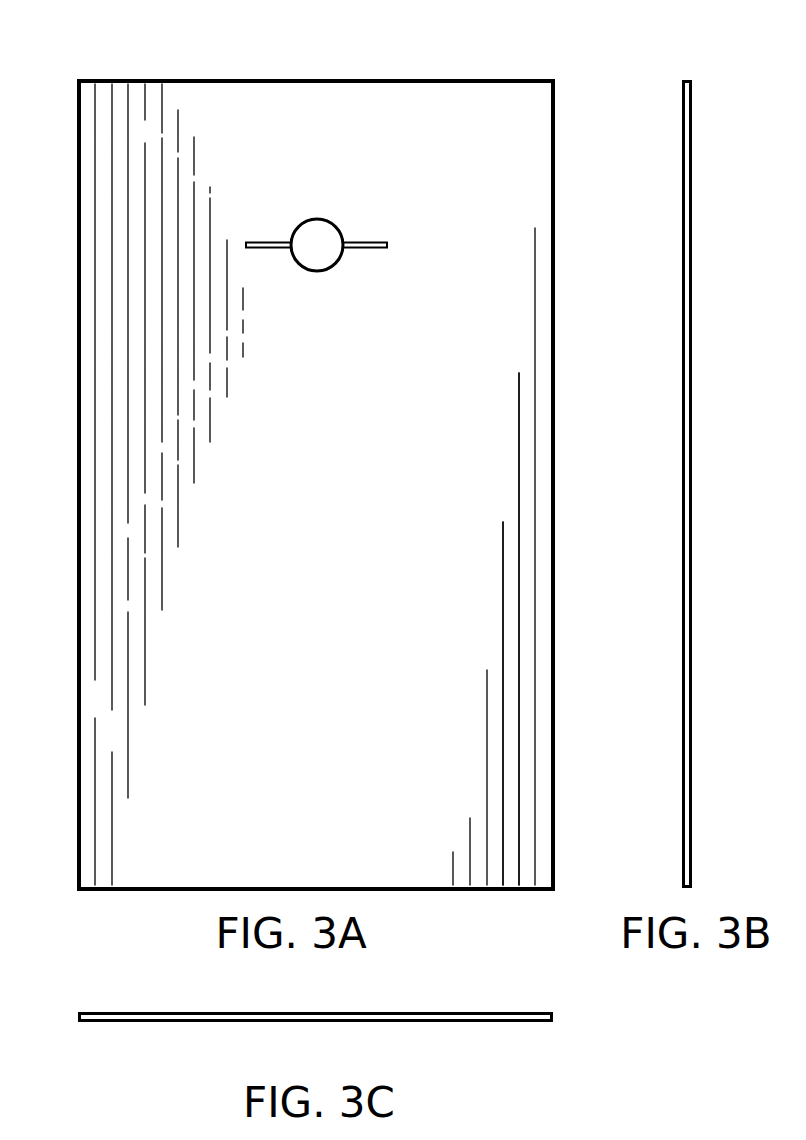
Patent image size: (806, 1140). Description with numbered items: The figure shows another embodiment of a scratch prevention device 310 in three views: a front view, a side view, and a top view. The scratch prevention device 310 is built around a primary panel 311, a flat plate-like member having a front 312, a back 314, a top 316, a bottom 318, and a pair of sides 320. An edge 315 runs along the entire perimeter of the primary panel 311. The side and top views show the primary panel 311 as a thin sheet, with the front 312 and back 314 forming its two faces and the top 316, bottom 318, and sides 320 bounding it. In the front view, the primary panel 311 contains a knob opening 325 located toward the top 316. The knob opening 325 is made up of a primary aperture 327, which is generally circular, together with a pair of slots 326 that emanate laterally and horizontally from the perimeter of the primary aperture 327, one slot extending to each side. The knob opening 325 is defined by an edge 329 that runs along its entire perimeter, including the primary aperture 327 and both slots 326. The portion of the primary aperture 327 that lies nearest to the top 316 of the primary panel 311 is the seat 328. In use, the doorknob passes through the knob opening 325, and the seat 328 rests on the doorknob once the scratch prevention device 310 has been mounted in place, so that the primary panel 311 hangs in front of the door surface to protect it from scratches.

In FIG. 3A, the scratch prevention device 310 is at (347, 481).
In FIG. 3A, the primary panel 311 is at (682, 680).
In FIG. 3A, the front 312 is at (682, 552).
In FIG. 3C, the front 312 is at (415, 1022).
In FIG. 3B, the back 314 is at (692, 632).
In FIG. 3C, the back 314 is at (383, 1012).
In FIG. 3A, the edge 315 is at (183, 891).
In FIG. 3A, the top 316 is at (393, 79).
In FIG. 3B, the top 316 is at (686, 78).
In FIG. 3C, the top 316 is at (212, 1012).
In FIG. 3A, the bottom 318 is at (455, 890).
In FIG. 3A, the pair of sides 320 is at (78, 462).
In FIG. 3C, the pair of sides 320 is at (553, 1017).
In FIG. 3A, the knob opening 325 is at (332, 230).
In FIG. 3A, the pair of slots 326 is at (370, 240).
In FIG. 3A, the primary aperture 327 is at (320, 246).
In FIG. 3A, the seat 328 is at (310, 221).
In FIG. 3A, the edge 329 is at (292, 236).